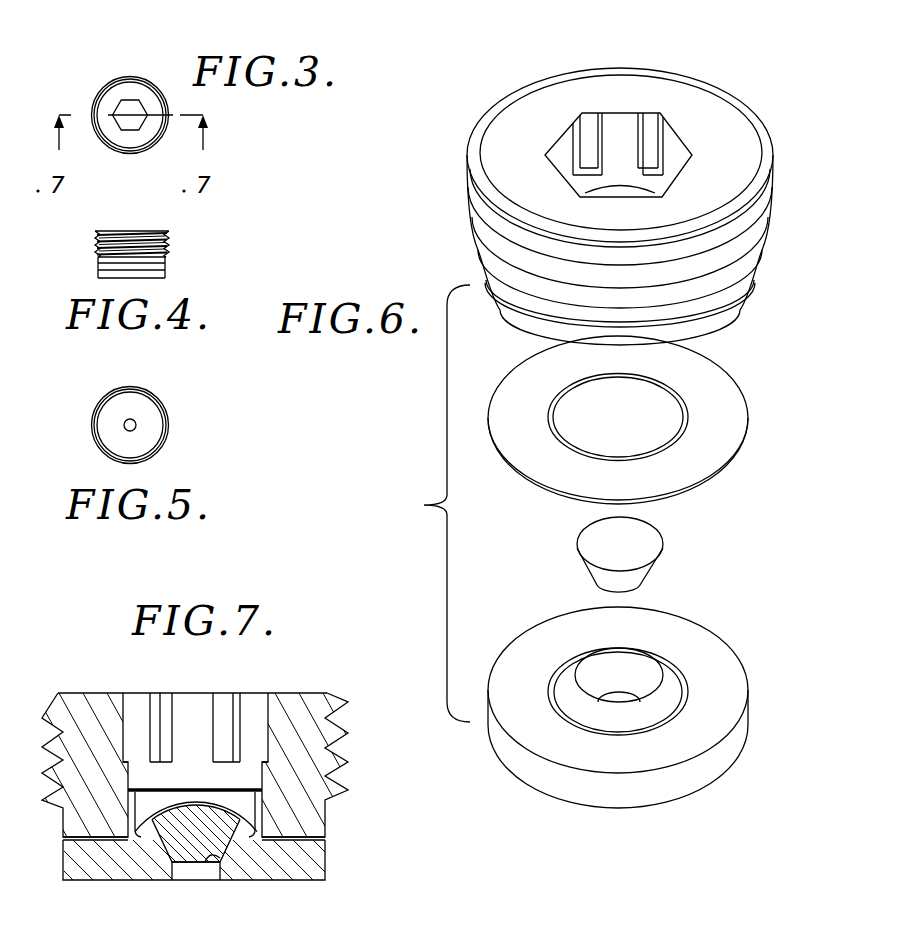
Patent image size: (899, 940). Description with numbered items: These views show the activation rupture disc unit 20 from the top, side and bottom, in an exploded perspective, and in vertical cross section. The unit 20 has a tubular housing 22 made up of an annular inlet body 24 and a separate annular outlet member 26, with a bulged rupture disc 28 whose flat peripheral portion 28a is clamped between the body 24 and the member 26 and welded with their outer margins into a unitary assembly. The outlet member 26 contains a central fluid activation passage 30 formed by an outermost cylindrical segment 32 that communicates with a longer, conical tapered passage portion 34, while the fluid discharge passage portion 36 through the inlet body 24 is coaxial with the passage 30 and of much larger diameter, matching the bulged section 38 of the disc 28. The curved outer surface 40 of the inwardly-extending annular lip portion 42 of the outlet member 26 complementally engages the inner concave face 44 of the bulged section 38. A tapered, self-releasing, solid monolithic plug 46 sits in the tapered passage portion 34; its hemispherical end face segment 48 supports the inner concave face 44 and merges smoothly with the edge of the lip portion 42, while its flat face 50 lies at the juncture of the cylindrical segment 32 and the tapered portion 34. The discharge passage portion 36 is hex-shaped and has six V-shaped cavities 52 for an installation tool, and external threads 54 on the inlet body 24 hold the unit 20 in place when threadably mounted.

In FIG. 3, the activation rupture disc unit 20 is at (93, 68).
In FIG. 4, the activation rupture disc unit 20 is at (182, 231).
In FIG. 5, the activation rupture disc unit 20 is at (168, 384).
In FIG. 6, the activation rupture disc unit 20 is at (434, 264).
In FIG. 7, the activation rupture disc unit 20 is at (58, 680).
In FIG. 3, the tubular housing 22 is at (140, 70).
In FIG. 4, the tubular housing 22 is at (84, 230).
In FIG. 5, the tubular housing 22 is at (178, 454).
In FIG. 7, the tubular housing 22 is at (347, 694).
In FIG. 3, the annular inlet body 24 is at (125, 85).
In FIG. 4, the annular inlet body 24 is at (148, 231).
In FIG. 5, the annular inlet body 24 is at (106, 455).
In FIG. 6, the annular inlet body 24 is at (498, 135).
In FIG. 7, the annular inlet body 24 is at (305, 692).
In FIG. 4, the annular outlet member 26 is at (105, 279).
In FIG. 5, the annular outlet member 26 is at (113, 407).
In FIG. 6, the annular outlet member 26 is at (705, 768).
In FIG. 7, the annular outlet member 26 is at (320, 866).
In FIG. 4, the bulged rupture disc 28 is at (164, 268).
In FIG. 6, the bulged rupture disc 28 is at (520, 364).
In FIG. 7, the bulged rupture disc 28 is at (328, 840).
In FIG. 6, the flat peripheral portion 28a is at (703, 383).
In FIG. 7, the flat peripheral portion 28a is at (85, 838).
In FIG. 3, the central fluid activation passage 30 is at (117, 106).
In FIG. 6, the central fluid activation passage 30 is at (557, 132).
In FIG. 7, the central fluid activation passage 30 is at (138, 692).
In FIG. 5, the outermost cylindrical segment 32 is at (136, 424).
In FIG. 7, the outermost cylindrical segment 32 is at (178, 880).
In FIG. 6, the tapered passage portion 34 is at (595, 668).
In FIG. 7, the tapered passage portion 34 is at (212, 862).
In FIG. 6, the fluid discharge passage portion 36 is at (616, 130).
In FIG. 7, the fluid discharge passage portion 36 is at (247, 700).
In FIG. 3, the bulged section 38 is at (124, 121).
In FIG. 6, the bulged section 38 is at (600, 418).
In FIG. 7, the bulged section 38 is at (197, 801).
In FIG. 7, the outer surface of lip portion 40 is at (136, 816).
In FIG. 6, the annular lip portion 42 is at (665, 682).
In FIG. 7, the annular lip portion 42 is at (248, 826).
In FIG. 7, the inner concave face 44 is at (217, 812).
In FIG. 5, the self-releasing plug 46 is at (124, 426).
In FIG. 6, the self-releasing plug 46 is at (645, 575).
In FIG. 7, the self-releasing plug 46 is at (152, 826).
In FIG. 6, the hemispherical end face segment 48 is at (590, 535).
In FIG. 7, the hemispherical end face segment 48 is at (170, 805).
In FIG. 7, the face of plug 50 is at (190, 863).
In FIG. 6, the V-shaped cavities 52 is at (649, 128).
In FIG. 7, the V-shaped cavities 52 is at (163, 700).
In FIG. 3, the external threads 54 is at (163, 99).
In FIG. 4, the external threads 54 is at (95, 248).
In FIG. 6, the external threads 54 is at (475, 205).
In FIG. 7, the external threads 54 is at (346, 740).